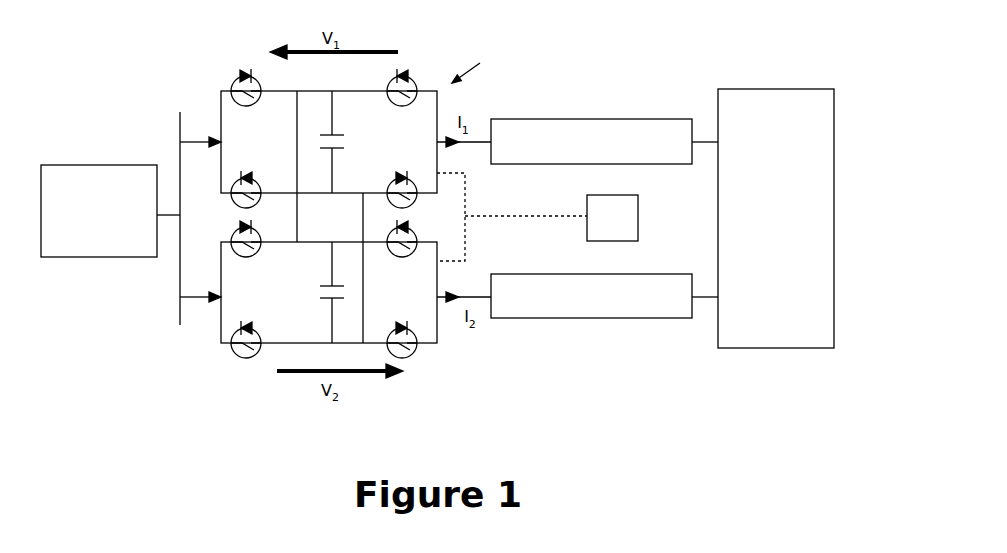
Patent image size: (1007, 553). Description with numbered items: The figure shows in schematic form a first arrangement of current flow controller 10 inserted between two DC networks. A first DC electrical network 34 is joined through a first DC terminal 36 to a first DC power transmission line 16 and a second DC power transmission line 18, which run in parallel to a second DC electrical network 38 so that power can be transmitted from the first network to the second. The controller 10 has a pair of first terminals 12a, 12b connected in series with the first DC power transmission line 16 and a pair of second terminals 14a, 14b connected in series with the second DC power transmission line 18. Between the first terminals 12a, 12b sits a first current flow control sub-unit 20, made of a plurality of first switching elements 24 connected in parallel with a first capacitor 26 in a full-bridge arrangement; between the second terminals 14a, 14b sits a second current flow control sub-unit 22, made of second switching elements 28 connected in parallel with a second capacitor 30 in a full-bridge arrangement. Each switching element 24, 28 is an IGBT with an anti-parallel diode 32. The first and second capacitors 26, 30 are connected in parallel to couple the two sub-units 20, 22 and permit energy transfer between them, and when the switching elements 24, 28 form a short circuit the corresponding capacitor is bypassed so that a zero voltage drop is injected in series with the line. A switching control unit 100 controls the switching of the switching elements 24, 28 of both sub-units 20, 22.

The current flow controller 10 is at (479, 67).
The first terminal 12a is at (218, 150).
The first terminal 12b is at (440, 137).
The second terminal 14a is at (216, 288).
The second terminal 14b is at (438, 302).
The first DC power transmission line 16 is at (604, 141).
The second DC power transmission line 18 is at (604, 296).
The first current flow control sub-unit 20 is at (232, 130).
The second current flow control sub-unit 22 is at (423, 317).
The first switching elements 24 is at (258, 105).
The first capacitor 26 is at (341, 145).
The second switching elements 28 is at (260, 245).
The second capacitor 30 is at (317, 291).
The anti-parallel diode 32 is at (245, 68).
The first DC electrical network 34 is at (110, 211).
The first DC terminal 36 is at (175, 206).
The second DC electrical network 38 is at (776, 218).
The switching control unit 100 is at (537, 217).